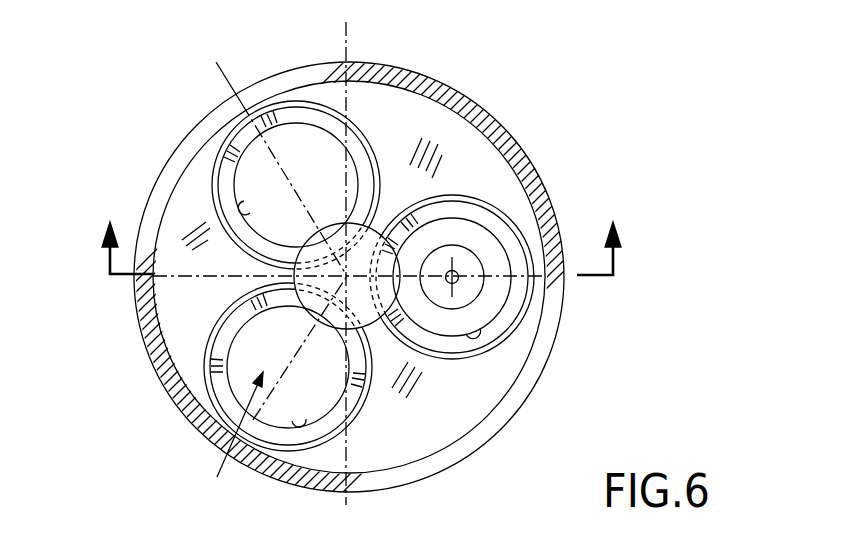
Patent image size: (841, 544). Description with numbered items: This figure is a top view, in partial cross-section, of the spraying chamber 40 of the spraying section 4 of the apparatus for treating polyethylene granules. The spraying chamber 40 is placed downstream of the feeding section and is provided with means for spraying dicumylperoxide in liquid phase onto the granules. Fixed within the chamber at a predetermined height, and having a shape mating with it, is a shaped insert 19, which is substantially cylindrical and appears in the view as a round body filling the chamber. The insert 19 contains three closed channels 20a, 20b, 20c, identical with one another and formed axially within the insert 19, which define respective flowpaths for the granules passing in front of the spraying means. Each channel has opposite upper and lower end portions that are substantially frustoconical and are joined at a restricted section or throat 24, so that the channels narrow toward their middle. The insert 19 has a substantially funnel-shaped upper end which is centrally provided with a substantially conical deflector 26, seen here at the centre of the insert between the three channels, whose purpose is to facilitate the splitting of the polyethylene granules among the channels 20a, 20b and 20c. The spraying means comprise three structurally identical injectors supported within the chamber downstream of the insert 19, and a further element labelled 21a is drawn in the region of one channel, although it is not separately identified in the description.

The spraying section 4 is at (125, 327).
The shaped insert 19 is at (400, 135).
The closed channel 20a is at (485, 247).
The closed channel 20b is at (203, 427).
The closed channel 20c is at (262, 188).
The planet gear shaft 21a is at (485, 294).
The throat 24 is at (240, 207).
The conical deflector 26 is at (397, 243).
The spraying chamber 40 is at (488, 168).